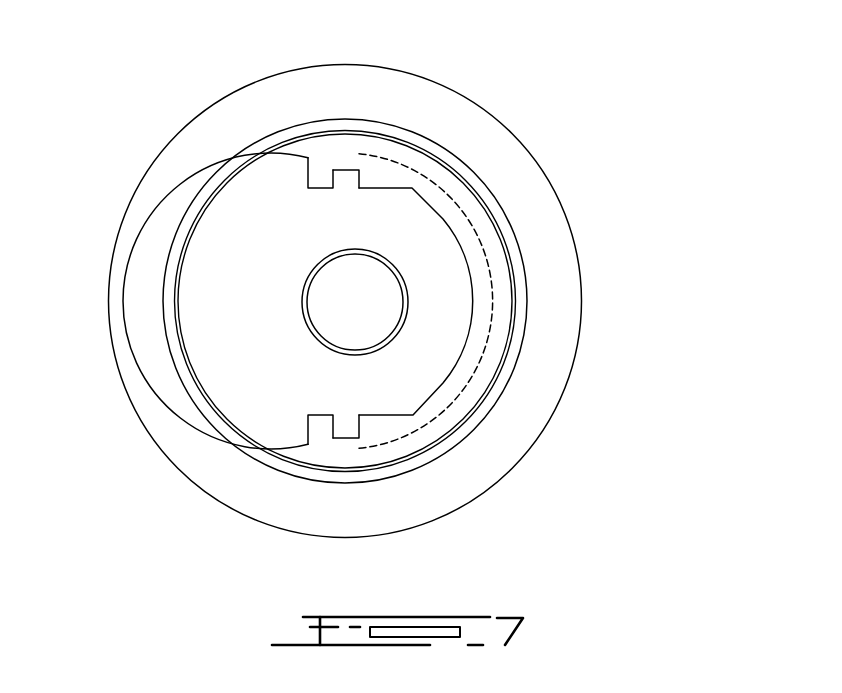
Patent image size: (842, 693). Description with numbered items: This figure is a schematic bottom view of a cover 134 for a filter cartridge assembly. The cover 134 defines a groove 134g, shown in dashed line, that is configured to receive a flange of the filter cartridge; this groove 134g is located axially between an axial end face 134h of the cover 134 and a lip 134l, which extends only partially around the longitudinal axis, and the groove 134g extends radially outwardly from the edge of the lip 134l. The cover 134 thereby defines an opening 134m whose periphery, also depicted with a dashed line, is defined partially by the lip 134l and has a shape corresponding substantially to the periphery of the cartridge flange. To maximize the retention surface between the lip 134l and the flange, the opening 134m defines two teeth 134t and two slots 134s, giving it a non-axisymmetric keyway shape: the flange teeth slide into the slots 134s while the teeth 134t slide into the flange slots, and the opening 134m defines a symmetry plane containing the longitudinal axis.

The cover 134 is at (603, 118).
The opening 134m is at (237, 407).
The groove 134g is at (497, 292).
The lip 134l is at (467, 368).
The axial end face 134h is at (272, 284).
The tooth 134t is at (323, 177).
The slot 134s is at (348, 180).